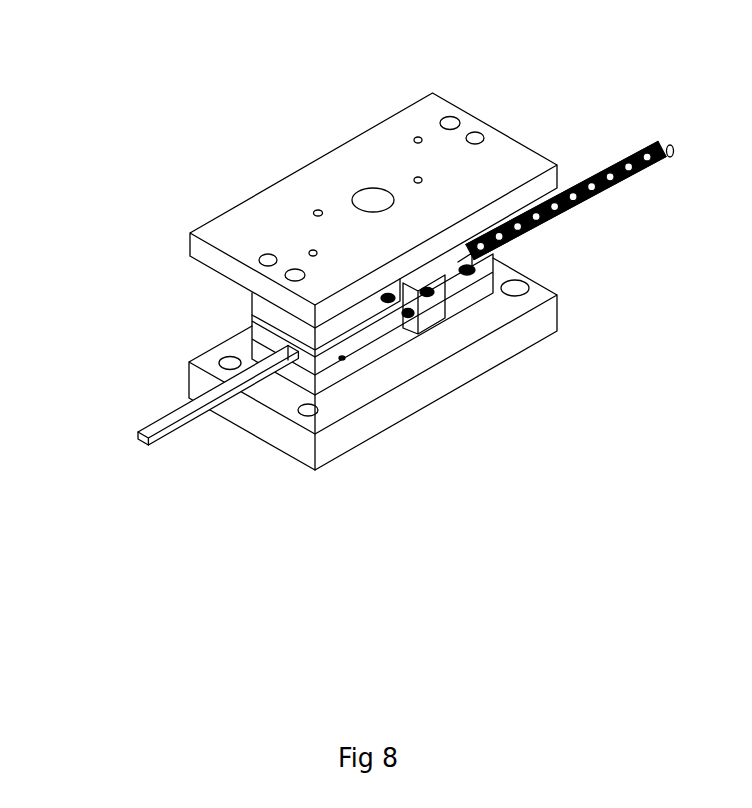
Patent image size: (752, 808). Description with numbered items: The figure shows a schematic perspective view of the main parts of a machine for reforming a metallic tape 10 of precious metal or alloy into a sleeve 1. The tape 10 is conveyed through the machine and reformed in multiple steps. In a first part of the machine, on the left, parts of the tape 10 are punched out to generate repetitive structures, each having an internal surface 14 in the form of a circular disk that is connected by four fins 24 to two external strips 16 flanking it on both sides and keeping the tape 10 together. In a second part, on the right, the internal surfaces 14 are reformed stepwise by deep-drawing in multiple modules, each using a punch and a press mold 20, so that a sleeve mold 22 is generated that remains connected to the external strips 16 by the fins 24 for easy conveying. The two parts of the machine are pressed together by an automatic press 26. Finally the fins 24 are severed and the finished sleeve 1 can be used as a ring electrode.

The sleeve 1 is at (660, 172).
The tape 10 is at (148, 443).
The internal surface 14 is at (399, 300).
The external strips 16 is at (385, 296).
The press mold 20 is at (468, 272).
The sleeve mold 22 is at (600, 168).
The fins 24 is at (583, 175).
The automatic press 26 is at (386, 163).